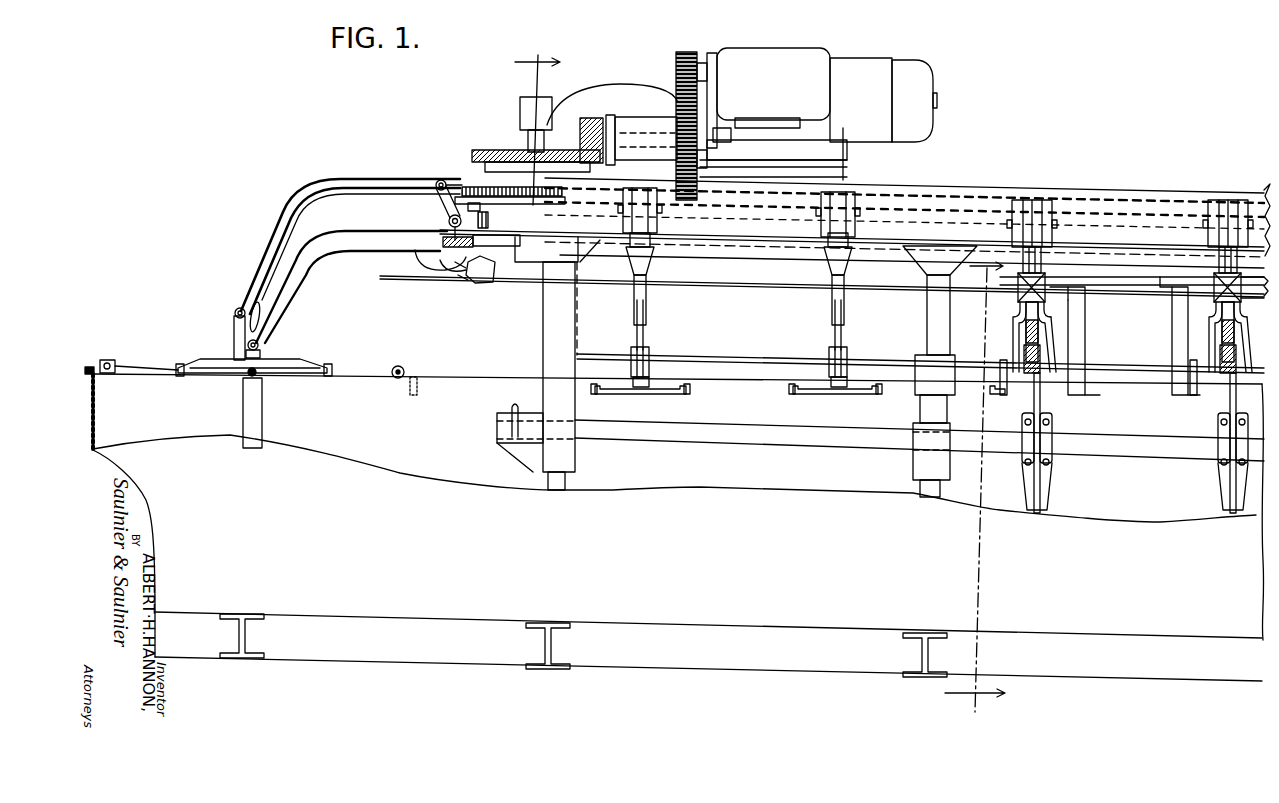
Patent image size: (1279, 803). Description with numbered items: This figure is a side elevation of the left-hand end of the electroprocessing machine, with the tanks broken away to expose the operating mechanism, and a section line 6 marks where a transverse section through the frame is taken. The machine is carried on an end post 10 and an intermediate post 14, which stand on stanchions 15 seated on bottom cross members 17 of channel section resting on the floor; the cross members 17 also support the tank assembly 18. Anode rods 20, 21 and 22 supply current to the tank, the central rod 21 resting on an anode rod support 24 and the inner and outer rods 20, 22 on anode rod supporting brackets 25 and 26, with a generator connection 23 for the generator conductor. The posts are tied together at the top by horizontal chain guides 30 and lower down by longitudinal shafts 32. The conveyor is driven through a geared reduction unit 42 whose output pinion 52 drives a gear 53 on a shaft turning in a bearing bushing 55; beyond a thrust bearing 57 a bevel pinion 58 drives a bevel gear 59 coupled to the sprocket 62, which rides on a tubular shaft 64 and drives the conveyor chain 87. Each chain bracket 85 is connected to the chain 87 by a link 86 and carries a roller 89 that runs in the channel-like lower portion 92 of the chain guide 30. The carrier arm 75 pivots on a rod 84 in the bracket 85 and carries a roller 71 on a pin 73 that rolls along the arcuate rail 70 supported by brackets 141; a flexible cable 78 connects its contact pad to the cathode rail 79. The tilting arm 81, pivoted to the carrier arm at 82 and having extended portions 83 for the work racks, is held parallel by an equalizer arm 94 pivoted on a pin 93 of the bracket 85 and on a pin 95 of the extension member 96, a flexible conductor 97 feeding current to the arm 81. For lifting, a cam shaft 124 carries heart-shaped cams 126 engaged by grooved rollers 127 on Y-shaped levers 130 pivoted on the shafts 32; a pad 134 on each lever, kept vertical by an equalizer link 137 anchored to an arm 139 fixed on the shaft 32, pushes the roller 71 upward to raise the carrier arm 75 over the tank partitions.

The section line 6- 6 is at (760, 377).
The end post 10 is at (543, 330).
The intermediate post 14 is at (927, 328).
The stanchion 15 is at (565, 480).
The bottom cross member 17 is at (248, 656).
The tank assembly 18 is at (428, 420).
The anode rod 20 is at (396, 362).
The central anode rod 21 is at (248, 374).
The anode rod 22 is at (110, 360).
The generator connection 23 is at (116, 366).
The anode rod support 24 is at (243, 413).
The anode rod supporting bracket 25 is at (416, 377).
The anode rod supporting bracket 26 is at (90, 367).
The chain guide 30 is at (1143, 232).
The longitudinal shaft 32 is at (757, 365).
The geared reduction unit 42 is at (782, 60).
The pinion 52 is at (688, 52).
The gear 53 is at (672, 92).
The bearing bushing 55 is at (632, 118).
The plate 57 is at (610, 115).
The bevel pinion 58 is at (590, 118).
The bevel gear 59 is at (492, 152).
The sprocket 62 is at (458, 197).
The tubular shaft 64 is at (545, 140).
The arcuate rail 70 is at (540, 264).
The roller 71 is at (468, 270).
The pin 73 is at (486, 283).
The carrier arm 75 is at (386, 254).
The flexible cable 78 is at (436, 268).
The cathode rail 79 is at (518, 243).
The tilting arm 81 is at (283, 365).
The pivot 82 is at (260, 345).
The extended portion 83 is at (179, 364).
The rod 84 is at (449, 221).
The chain bracket 85 is at (443, 205).
The link 86 is at (480, 207).
The conveyor chain 87 is at (470, 187).
The roller 89 is at (489, 222).
The lower portion of chain guide 92 is at (1122, 255).
The pin 93 is at (438, 181).
The equalizer arm 94 is at (322, 182).
The pin 95 is at (235, 311).
The extension member 96 is at (234, 330).
The flexible conductor 97 is at (259, 302).
The cam shaft 124 is at (685, 440).
The cam 126 is at (1048, 487).
The grooved roller 127 is at (1052, 413).
The Y-shaped lever 130 is at (1068, 342).
The pad 134 is at (1014, 303).
The rod 137 is at (1013, 326).
The arm 139 is at (996, 372).
The bracket 141 is at (1172, 324).